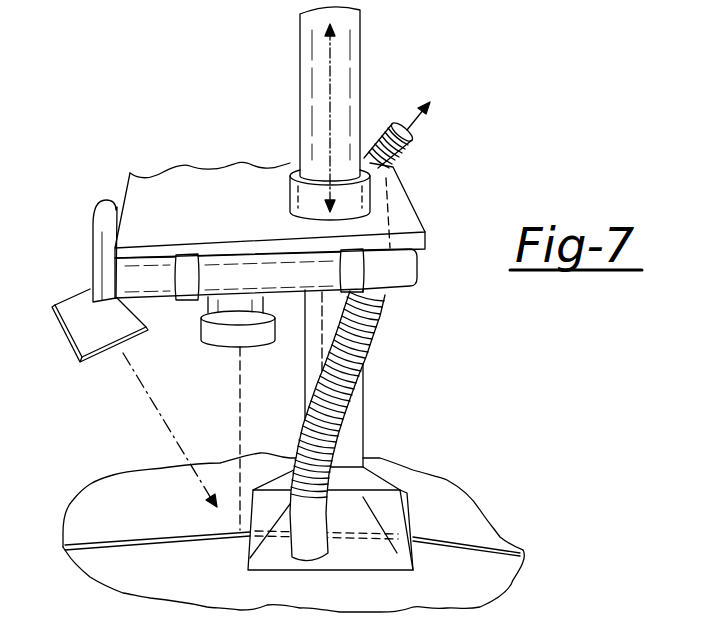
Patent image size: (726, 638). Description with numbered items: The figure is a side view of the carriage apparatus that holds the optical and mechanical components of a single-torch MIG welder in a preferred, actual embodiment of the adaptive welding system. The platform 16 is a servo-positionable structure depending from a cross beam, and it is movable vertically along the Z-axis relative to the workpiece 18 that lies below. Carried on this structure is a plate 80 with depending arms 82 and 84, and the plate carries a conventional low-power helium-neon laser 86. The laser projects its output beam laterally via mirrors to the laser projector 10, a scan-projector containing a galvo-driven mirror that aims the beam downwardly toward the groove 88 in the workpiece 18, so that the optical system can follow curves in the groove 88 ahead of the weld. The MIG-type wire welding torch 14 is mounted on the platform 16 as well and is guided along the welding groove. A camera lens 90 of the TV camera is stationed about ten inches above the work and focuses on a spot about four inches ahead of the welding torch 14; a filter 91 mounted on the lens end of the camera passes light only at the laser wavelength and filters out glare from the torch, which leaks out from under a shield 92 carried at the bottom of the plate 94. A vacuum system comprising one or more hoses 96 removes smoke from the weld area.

The laser projector 10 is at (113, 332).
The welding torch 14 is at (381, 429).
The platform 16 is at (400, 85).
The workpiece 18 is at (465, 563).
The plate 80 is at (417, 232).
The depending arm 82 is at (183, 270).
The depending arm 84 is at (358, 268).
The helium-neon laser 86 is at (284, 284).
The groove 88 is at (185, 493).
The camera lens 90 is at (207, 345).
The filter 91 is at (252, 345).
The shield 92 is at (400, 513).
The plate 94 is at (368, 410).
The hose 96 is at (377, 336).